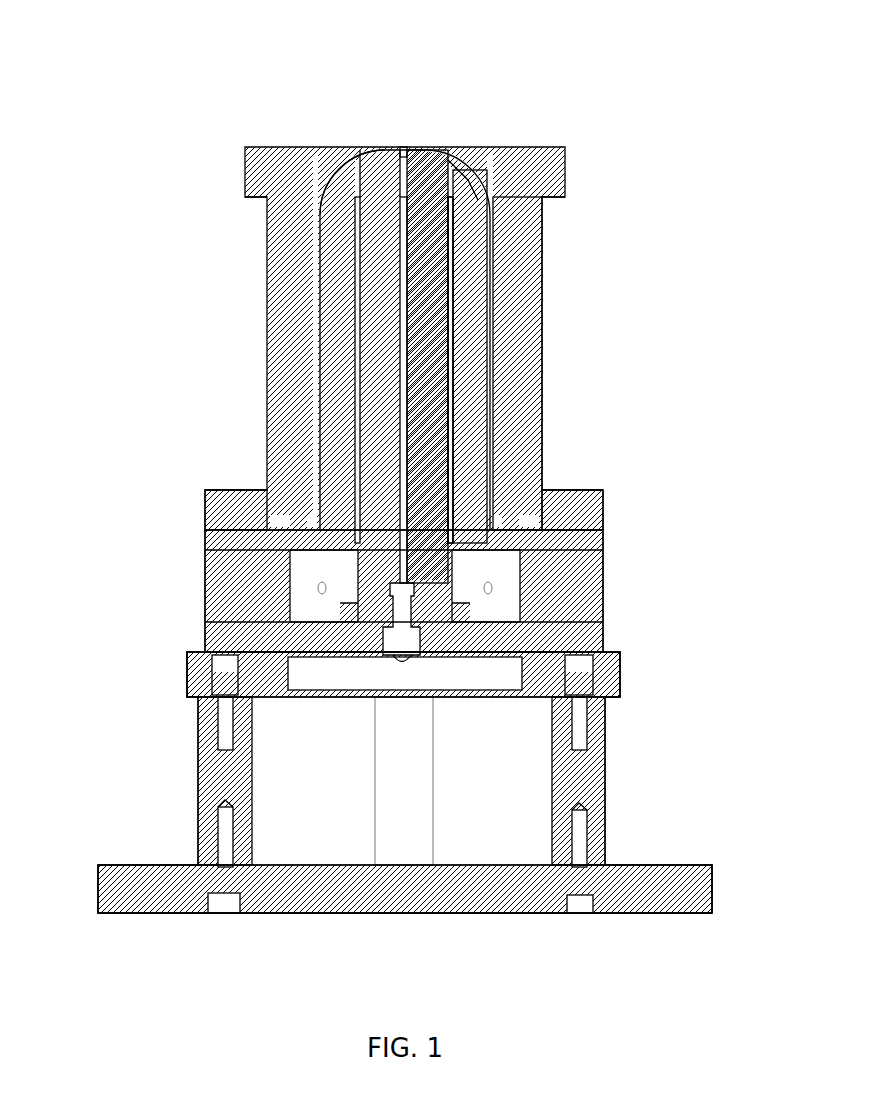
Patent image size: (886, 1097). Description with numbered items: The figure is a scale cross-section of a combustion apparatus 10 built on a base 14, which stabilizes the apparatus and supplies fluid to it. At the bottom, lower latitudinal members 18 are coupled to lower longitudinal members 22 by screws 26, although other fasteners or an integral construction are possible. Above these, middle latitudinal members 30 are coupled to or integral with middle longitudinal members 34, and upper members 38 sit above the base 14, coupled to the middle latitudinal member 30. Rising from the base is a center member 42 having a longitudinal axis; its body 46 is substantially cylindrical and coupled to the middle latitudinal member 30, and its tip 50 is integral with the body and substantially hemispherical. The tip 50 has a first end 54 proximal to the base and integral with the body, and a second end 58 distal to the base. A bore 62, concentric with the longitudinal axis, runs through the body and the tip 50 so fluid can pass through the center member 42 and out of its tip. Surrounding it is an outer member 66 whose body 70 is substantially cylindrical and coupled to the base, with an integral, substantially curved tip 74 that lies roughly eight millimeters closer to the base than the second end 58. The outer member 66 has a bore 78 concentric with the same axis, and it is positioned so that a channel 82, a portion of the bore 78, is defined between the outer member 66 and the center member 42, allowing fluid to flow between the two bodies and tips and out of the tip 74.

The combustion apparatus 10 is at (184, 31).
The base 14 is at (124, 644).
The lower latitudinal members 18 is at (605, 680).
The lower longitudinal members 22 is at (215, 775).
The screws 26 is at (235, 725).
The middle latitudinal members 30 is at (232, 535).
The middle longitudinal members 34 is at (596, 556).
The upper members 38 is at (228, 492).
The center member 42 is at (434, 418).
The body 46 is at (380, 223).
The tip 50 is at (383, 167).
The first end 54 is at (454, 179).
The second end 58 is at (420, 144).
The bore 62 is at (403, 310).
The outer member 66 is at (477, 463).
The body 70 is at (478, 330).
The tip 74 is at (343, 173).
The bore 78 is at (447, 268).
The channel 82 is at (452, 200).